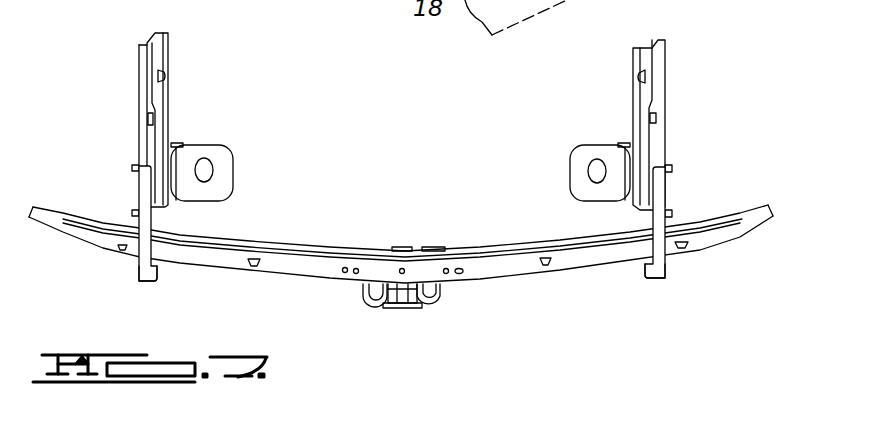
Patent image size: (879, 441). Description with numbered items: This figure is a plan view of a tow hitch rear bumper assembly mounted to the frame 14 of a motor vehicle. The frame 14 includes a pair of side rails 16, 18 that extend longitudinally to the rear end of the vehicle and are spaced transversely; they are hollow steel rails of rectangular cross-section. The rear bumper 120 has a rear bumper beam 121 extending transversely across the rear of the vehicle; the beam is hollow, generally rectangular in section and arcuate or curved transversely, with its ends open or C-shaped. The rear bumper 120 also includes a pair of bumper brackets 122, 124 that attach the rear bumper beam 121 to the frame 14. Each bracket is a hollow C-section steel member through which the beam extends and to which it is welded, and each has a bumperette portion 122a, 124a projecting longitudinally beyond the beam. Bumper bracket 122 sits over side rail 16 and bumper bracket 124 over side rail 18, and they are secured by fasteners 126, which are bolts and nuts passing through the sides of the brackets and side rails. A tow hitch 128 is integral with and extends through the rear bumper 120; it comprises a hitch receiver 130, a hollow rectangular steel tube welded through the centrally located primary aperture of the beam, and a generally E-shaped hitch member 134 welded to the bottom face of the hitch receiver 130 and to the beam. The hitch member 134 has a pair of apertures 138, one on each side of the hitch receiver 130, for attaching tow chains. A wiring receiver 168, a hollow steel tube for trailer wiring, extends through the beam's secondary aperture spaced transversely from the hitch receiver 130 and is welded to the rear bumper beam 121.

The frame 14 is at (140, 57).
The side rail 16 is at (665, 60).
The side rail 18 is at (143, 78).
The rear bumper 120 is at (562, 277).
The rear bumper beam 121 is at (502, 263).
The bumper bracket 122 is at (672, 213).
The bumperette portion 122a is at (663, 277).
The bumper bracket 124 is at (134, 211).
The bumperette portion 124a is at (139, 275).
The fasteners 126 is at (134, 167).
The tow hitch 128 is at (390, 312).
The hitch receiver 130 is at (400, 298).
The hitch member 134 is at (367, 303).
The apertures 138 is at (378, 290).
The wiring receiver 168 is at (432, 249).